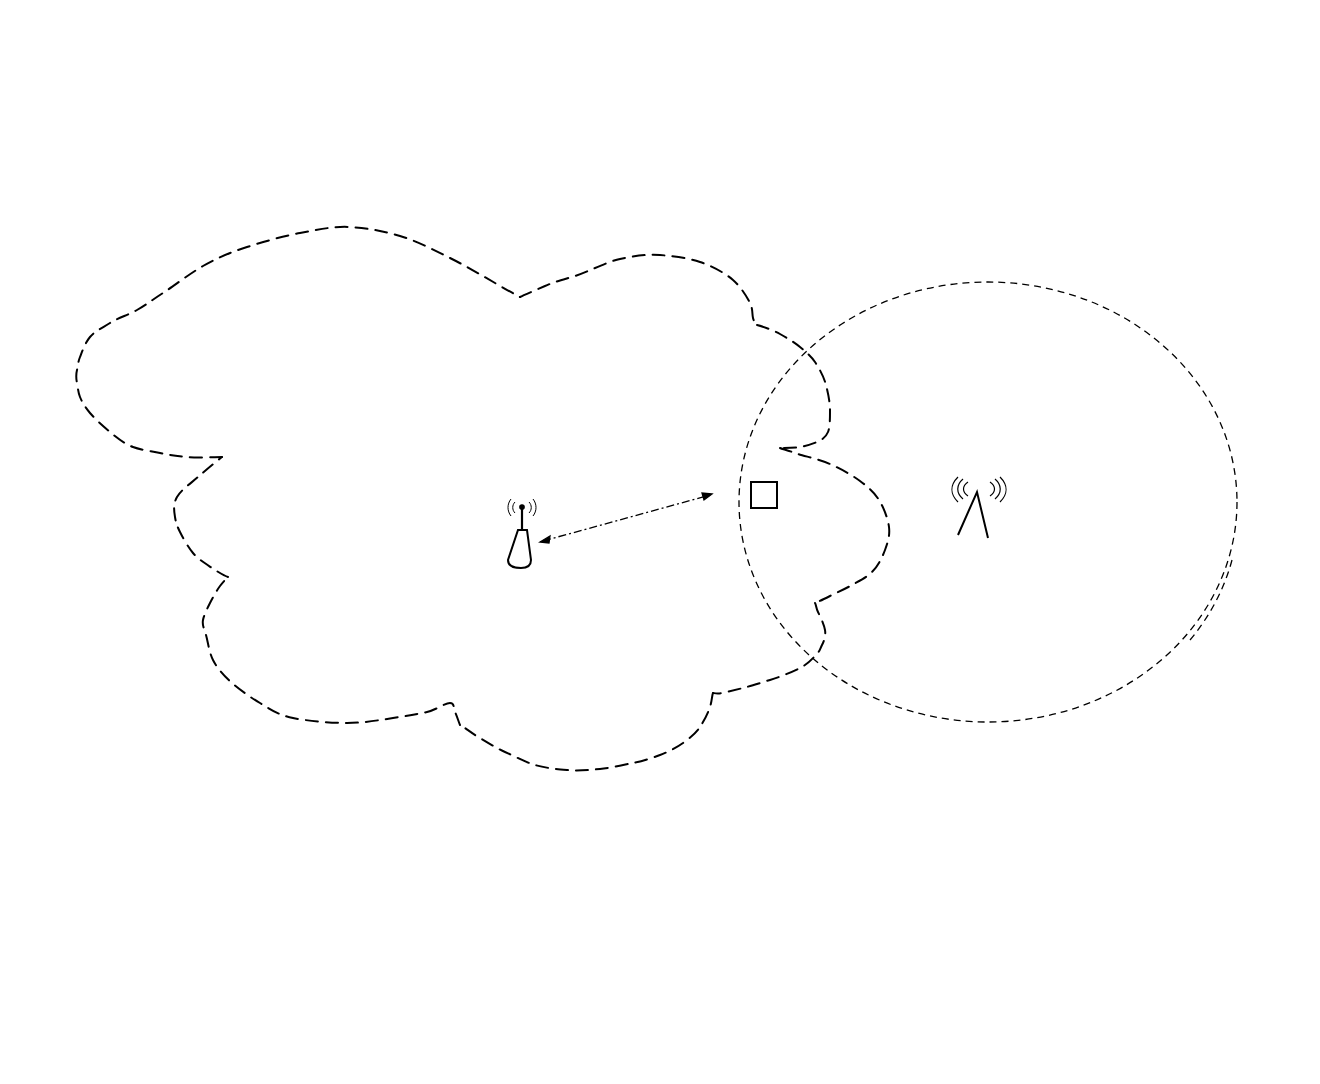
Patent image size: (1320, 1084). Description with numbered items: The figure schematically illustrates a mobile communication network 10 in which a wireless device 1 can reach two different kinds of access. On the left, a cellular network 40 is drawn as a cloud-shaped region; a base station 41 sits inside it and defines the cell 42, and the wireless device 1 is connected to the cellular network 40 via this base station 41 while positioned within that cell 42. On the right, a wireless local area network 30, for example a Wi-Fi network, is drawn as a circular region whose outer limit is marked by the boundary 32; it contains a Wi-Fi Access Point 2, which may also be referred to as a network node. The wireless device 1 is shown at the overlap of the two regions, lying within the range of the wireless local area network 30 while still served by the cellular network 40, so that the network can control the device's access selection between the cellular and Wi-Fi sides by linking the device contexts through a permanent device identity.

The wireless device 1 is at (760, 508).
The Wi-Fi Access Point 2 is at (957, 518).
The mobile communication network 10 is at (697, 519).
The wireless local area network 30 is at (1160, 307).
The cell boundary 32 is at (1212, 595).
The cellular network 40 is at (482, 443).
The base station 41 is at (510, 551).
The cell 42 is at (567, 280).